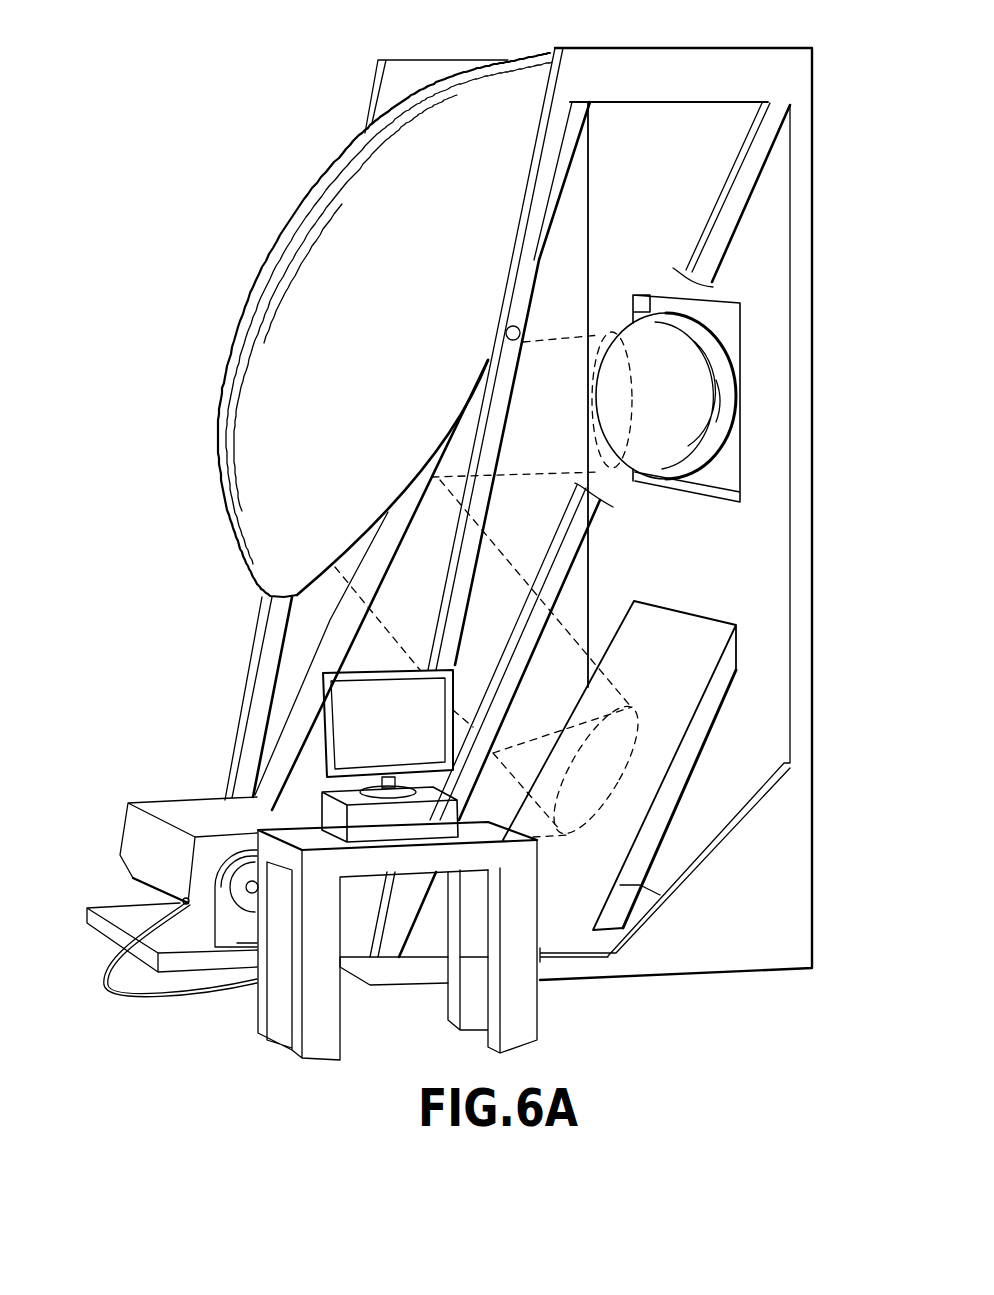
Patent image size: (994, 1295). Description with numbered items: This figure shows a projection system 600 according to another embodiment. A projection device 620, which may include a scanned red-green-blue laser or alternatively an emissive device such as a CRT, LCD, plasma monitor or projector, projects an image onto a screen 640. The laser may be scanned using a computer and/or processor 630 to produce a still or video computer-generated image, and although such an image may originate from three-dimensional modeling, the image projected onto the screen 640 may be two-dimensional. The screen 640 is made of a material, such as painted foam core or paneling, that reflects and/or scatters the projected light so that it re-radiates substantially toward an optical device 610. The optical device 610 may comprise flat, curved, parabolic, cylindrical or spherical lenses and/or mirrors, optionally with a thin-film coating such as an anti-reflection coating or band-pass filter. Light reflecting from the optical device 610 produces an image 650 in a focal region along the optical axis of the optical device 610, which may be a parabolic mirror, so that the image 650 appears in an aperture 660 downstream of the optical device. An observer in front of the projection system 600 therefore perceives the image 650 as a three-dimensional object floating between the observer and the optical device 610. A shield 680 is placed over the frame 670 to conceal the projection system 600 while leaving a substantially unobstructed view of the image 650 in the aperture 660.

The projection system 600 is at (224, 144).
The optical device 610 is at (219, 440).
The projection device 620 is at (126, 830).
The computer and/or processor 630 is at (372, 742).
The screen 640 is at (672, 618).
The image 650 is at (650, 408).
The aperture 660 is at (741, 325).
The frame 670 is at (813, 140).
The shield 680 is at (692, 192).